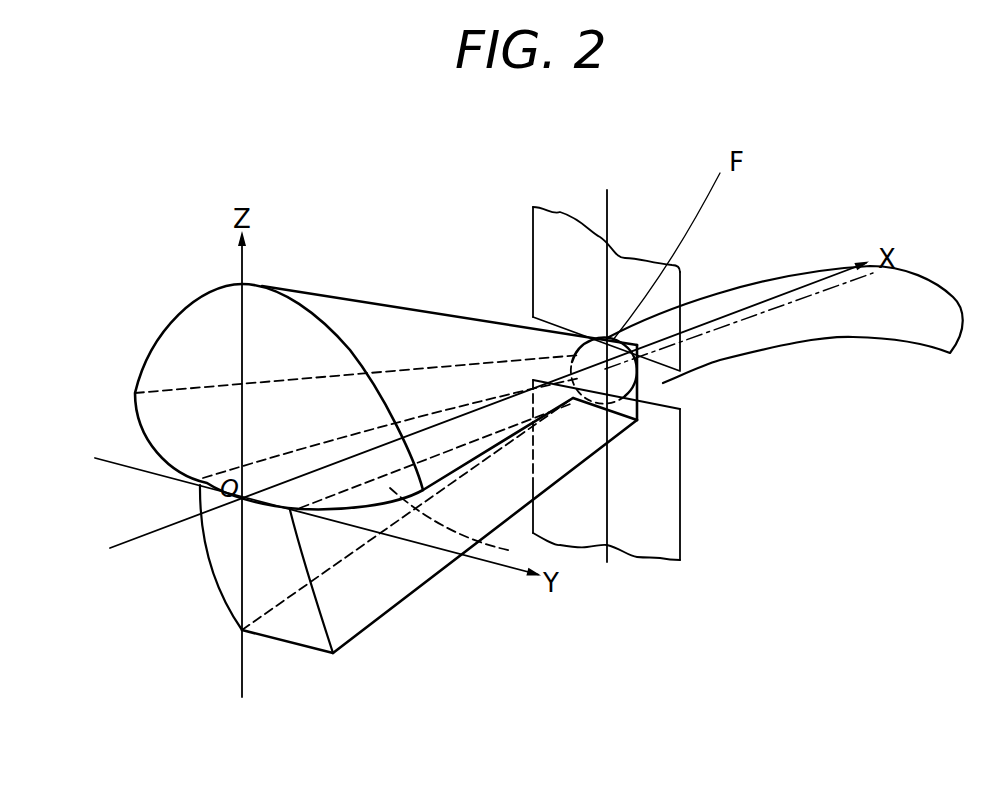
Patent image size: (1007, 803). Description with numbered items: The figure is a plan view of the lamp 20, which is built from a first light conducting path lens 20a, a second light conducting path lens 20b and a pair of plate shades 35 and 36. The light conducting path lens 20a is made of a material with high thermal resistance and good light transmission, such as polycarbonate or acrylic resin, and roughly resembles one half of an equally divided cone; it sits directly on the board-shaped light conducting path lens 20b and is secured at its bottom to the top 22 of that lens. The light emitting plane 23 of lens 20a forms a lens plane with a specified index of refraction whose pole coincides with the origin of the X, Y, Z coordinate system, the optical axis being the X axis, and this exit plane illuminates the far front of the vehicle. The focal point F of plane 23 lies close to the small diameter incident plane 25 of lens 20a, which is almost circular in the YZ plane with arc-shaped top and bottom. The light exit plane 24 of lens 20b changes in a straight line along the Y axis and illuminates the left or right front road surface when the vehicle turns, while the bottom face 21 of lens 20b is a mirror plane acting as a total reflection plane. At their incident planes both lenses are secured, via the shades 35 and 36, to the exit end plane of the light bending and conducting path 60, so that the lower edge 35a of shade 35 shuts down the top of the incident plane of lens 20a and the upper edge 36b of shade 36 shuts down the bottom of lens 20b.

The lamp 20 is at (374, 439).
The light conducting path lens 20a is at (378, 298).
The light conducting path lens 20b is at (440, 570).
The bottom face 21 is at (492, 550).
The top 22 is at (300, 512).
The light emitting plane 23 is at (187, 337).
The light exit plane 24 is at (217, 570).
The incident plane 25 is at (613, 338).
The plate shade 35 is at (660, 274).
The lower edge 35a is at (680, 356).
The plate shade 36 is at (660, 470).
The upper edge 36b is at (672, 418).
The light bending and conducting path 60 is at (735, 283).